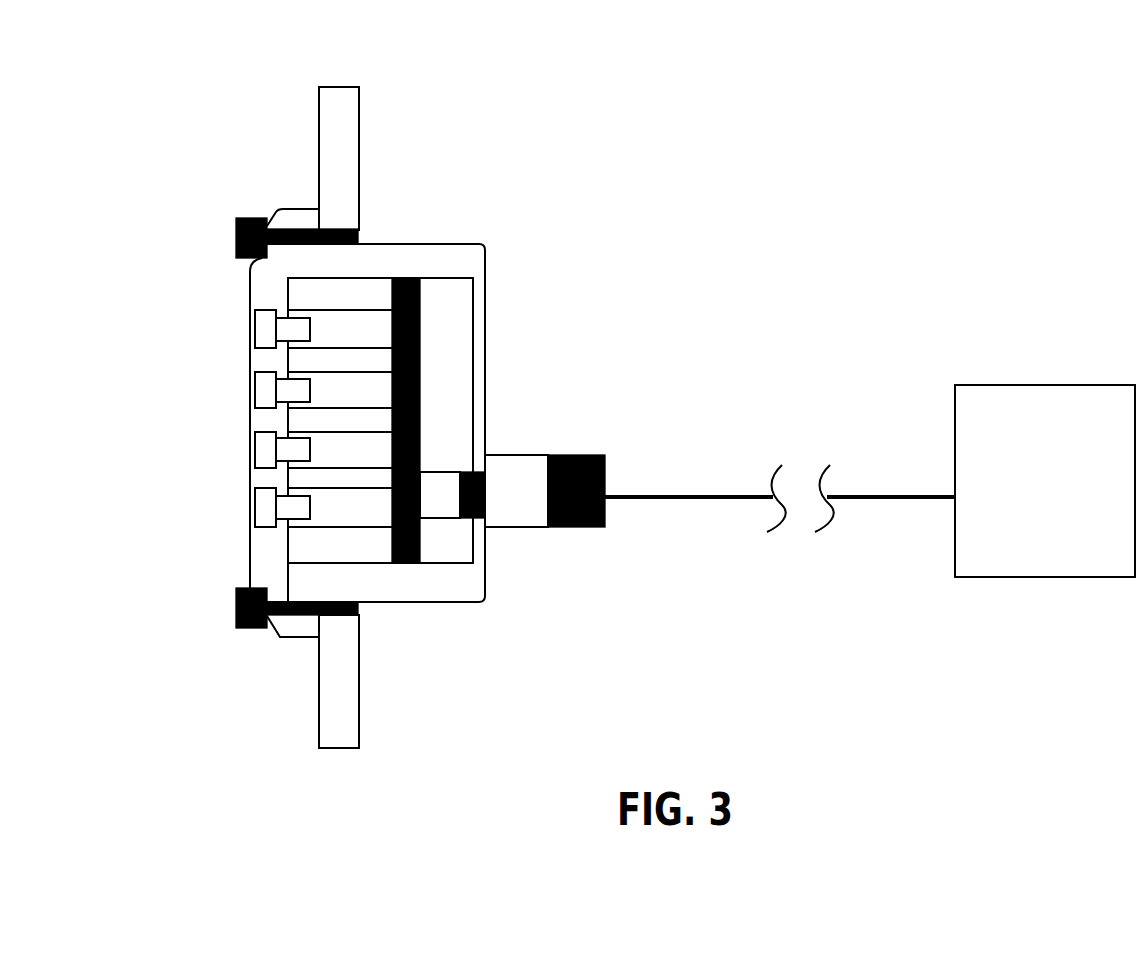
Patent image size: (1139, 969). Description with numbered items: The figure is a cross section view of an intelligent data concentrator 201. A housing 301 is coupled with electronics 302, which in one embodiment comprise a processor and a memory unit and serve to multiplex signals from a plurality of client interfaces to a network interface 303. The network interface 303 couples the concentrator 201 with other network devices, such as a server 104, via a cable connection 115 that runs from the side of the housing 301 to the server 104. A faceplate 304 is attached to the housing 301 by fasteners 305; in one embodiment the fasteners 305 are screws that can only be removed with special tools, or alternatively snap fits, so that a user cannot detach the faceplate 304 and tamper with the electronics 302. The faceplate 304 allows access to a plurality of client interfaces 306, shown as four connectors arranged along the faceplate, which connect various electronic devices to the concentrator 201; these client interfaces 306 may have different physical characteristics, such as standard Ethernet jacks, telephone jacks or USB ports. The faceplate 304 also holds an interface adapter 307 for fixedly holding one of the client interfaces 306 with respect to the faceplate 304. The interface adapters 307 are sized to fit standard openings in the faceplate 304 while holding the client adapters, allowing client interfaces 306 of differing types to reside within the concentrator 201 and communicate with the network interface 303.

The intelligent data concentrator 201 is at (697, 34).
The housing 301 is at (392, 405).
The electronics 302 is at (425, 389).
The network interface 303 is at (534, 468).
The faceplate 304 is at (265, 557).
The fasteners 305 is at (223, 219).
The client interfaces 306 is at (298, 502).
The interface adapter 307 is at (253, 342).
The cable connection 115 is at (817, 425).
The server 104 is at (1064, 518).